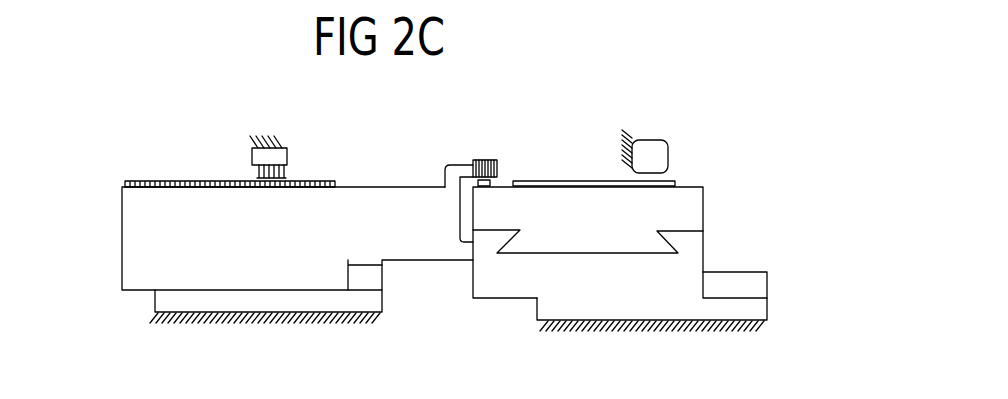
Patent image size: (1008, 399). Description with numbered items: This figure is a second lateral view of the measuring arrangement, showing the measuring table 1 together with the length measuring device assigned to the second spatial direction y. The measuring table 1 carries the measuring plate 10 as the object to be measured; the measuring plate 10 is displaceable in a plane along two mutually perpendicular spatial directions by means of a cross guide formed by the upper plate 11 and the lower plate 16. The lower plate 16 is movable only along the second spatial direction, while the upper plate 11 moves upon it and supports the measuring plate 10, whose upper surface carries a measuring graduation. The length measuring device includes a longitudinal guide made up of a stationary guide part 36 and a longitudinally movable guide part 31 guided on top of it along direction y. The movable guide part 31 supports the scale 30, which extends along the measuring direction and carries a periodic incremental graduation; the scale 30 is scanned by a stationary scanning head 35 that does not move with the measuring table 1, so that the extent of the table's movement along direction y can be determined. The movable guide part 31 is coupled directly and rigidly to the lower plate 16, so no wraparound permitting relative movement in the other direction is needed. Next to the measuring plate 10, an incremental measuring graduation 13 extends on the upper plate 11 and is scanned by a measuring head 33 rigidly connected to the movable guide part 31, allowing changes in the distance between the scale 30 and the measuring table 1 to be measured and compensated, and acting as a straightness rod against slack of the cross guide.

The measuring table 1 is at (722, 178).
The measuring plate 10 is at (558, 178).
The upper plate 11 is at (690, 207).
The incremental measuring graduation 13 is at (498, 183).
The lower plate 16 is at (690, 253).
The scale 30 is at (172, 185).
The longitudinally movable guide part 31 is at (137, 217).
The measuring head 33 is at (487, 160).
The scanning head 35 is at (263, 155).
The stationary guide part 36 is at (372, 277).